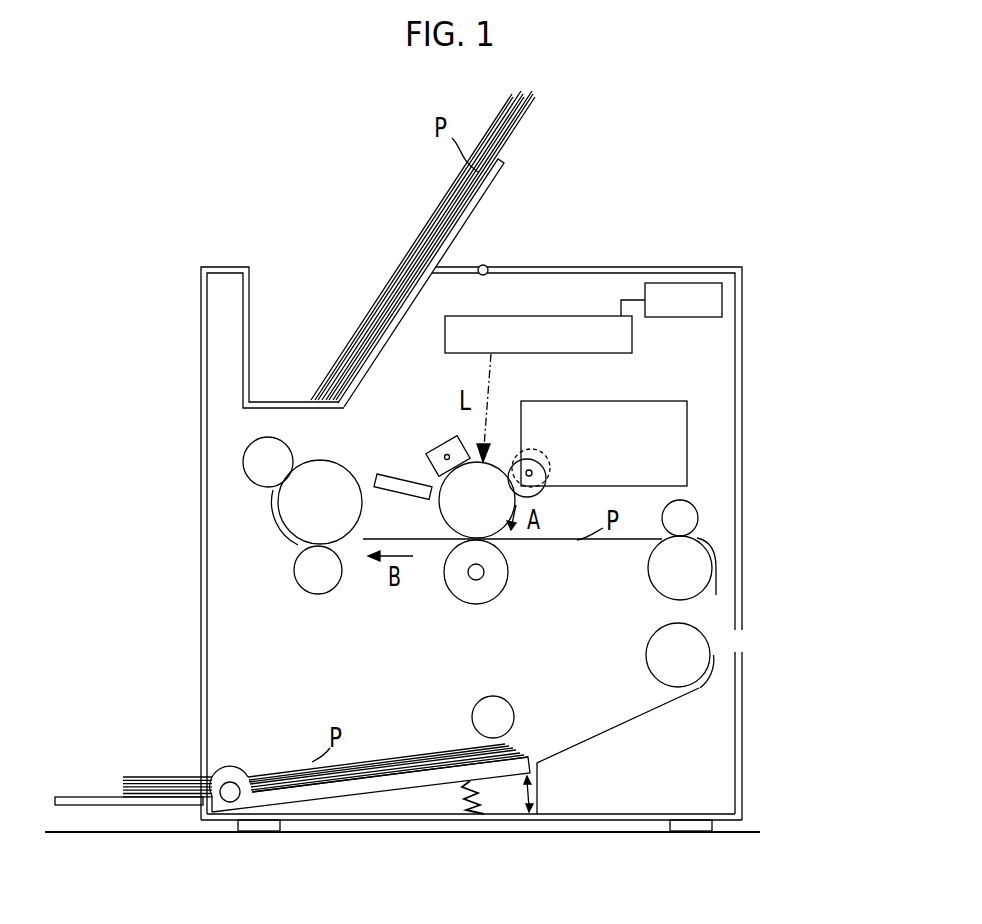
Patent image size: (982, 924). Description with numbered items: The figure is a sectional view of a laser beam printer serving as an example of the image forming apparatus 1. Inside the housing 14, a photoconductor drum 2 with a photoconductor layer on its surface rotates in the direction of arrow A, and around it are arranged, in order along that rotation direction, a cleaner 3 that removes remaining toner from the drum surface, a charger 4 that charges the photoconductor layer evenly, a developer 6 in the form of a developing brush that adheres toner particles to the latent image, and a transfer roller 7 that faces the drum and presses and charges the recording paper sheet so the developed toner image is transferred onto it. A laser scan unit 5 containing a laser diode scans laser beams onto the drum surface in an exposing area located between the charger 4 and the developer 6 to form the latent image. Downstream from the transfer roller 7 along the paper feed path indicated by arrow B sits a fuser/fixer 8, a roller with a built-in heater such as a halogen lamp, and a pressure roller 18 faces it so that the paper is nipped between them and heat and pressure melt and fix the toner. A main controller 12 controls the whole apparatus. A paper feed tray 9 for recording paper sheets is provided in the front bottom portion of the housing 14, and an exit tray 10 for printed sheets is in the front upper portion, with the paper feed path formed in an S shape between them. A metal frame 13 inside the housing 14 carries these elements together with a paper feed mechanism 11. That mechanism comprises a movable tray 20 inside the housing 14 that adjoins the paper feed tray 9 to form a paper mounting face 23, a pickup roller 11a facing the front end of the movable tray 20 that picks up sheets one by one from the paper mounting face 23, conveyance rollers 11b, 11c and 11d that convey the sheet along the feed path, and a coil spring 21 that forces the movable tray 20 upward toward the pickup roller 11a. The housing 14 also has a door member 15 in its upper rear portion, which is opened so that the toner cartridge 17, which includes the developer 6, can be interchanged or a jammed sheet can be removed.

The image forming apparatus 1 is at (866, 236).
The photoconductor drum 2 is at (445, 512).
The cleaner 3 is at (392, 480).
The charger 4 is at (440, 452).
The laser scan unit 5 is at (530, 317).
The developer 6 is at (537, 488).
The transfer roller 7 is at (460, 590).
The fuser/fixer 8 is at (305, 528).
The paper feed tray 9 is at (80, 797).
The exit tray 10 is at (482, 193).
The paper feed mechanism 11 is at (707, 514).
The pickup roller 11a is at (480, 716).
The conveyance roller 11b is at (695, 663).
The conveyance roller 11c is at (660, 585).
The conveyance roller 11d is at (684, 512).
The main controller 12 is at (689, 283).
The frame 13 is at (590, 822).
The housing 14 is at (201, 283).
The door member 15 is at (742, 360).
The toner cartridge 17 is at (628, 401).
The pressure roller 18 is at (330, 580).
The movable tray 20 is at (352, 790).
The coil spring 21 is at (462, 820).
The paper mounting face 23 is at (390, 770).